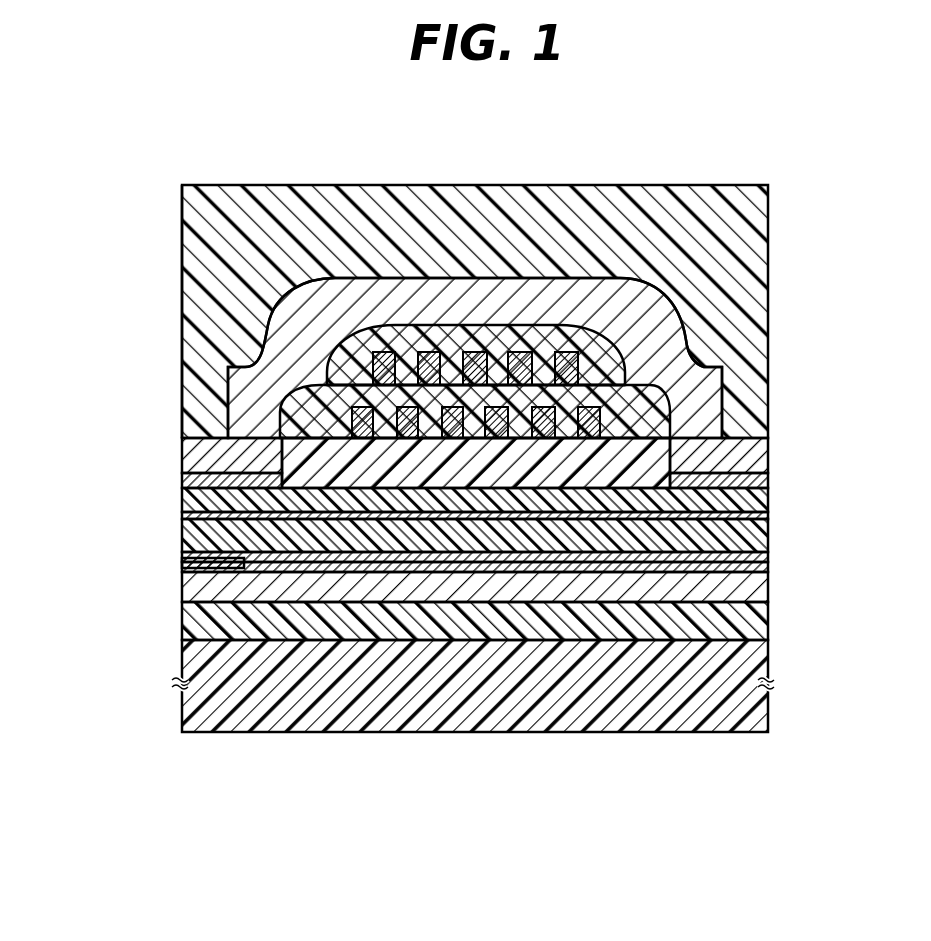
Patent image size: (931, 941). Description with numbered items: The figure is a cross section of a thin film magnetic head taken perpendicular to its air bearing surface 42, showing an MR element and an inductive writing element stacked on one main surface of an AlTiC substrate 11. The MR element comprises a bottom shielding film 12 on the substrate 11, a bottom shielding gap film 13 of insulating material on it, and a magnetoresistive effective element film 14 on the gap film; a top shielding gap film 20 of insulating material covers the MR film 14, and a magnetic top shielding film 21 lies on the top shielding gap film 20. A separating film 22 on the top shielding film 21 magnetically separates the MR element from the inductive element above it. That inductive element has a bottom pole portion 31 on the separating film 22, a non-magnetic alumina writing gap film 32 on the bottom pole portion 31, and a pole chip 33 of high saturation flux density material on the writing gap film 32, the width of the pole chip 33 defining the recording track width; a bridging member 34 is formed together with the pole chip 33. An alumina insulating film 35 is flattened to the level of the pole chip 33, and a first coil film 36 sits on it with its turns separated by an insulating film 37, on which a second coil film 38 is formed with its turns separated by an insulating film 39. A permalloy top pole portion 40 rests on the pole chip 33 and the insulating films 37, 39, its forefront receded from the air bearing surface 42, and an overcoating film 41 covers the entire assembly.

The substrate 11 is at (170, 602).
The bottom shielding film 12 is at (467, 588).
The bottom shielding gap film 13 is at (378, 565).
The magnetoresistive effective element film 14 is at (190, 565).
The top shielding gap film 20 is at (583, 557).
The top shielding film 21 is at (190, 540).
The separating film 22 is at (190, 515).
The bottom pole portion 31 is at (190, 497).
The writing gap film 32 is at (192, 477).
The pole chip 33 is at (203, 453).
The bridging member 34 is at (748, 457).
The insulating film 35 is at (343, 470).
The first coil film 36 is at (358, 395).
The insulating film 37 is at (500, 383).
The second coil film 38 is at (425, 362).
The insulating film 39 is at (547, 335).
The top pole portion 40 is at (317, 307).
The overcoating film 41 is at (690, 222).
The air bearing surface 42 is at (182, 352).